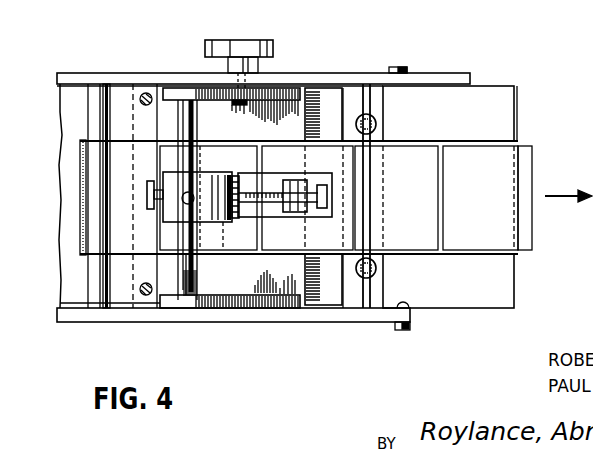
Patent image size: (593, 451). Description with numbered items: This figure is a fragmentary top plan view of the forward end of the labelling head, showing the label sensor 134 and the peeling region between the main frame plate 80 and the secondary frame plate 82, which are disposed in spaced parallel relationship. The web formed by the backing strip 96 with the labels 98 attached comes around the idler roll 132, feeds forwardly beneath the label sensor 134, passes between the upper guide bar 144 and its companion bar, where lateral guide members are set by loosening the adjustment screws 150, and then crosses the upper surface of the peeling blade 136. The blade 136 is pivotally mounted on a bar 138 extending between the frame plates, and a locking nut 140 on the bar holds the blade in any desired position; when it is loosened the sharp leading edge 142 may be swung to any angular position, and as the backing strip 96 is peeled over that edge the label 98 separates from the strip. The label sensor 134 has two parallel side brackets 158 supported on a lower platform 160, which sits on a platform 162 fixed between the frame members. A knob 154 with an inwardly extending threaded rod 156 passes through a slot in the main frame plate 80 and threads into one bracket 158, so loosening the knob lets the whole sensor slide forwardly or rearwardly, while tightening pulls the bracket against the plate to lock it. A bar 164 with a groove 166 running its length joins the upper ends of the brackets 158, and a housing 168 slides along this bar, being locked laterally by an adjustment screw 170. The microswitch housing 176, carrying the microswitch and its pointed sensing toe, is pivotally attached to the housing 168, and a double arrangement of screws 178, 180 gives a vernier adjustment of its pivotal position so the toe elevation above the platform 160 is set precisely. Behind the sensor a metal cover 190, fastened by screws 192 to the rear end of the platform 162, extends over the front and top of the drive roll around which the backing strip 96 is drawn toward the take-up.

The main frame plate 80 is at (113, 82).
The secondary frame plate 82 is at (221, 317).
The backing strip 96 is at (447, 141).
The labels 98 is at (532, 227).
The idler roll 132 is at (97, 273).
The label sensor 134 is at (278, 128).
The peeling blade 136 is at (480, 96).
The bar 138 is at (408, 306).
The locking nut 140 is at (393, 69).
The leading edge 142 is at (515, 98).
The upper guide bar 144 is at (363, 88).
The adjustment screws 150 is at (364, 277).
The knob 154 is at (238, 45).
The threaded rod 156 is at (239, 104).
The side brackets 158 is at (180, 88).
The lower platform 160 is at (294, 281).
The platform 162 is at (325, 93).
The bar 164 is at (181, 273).
The groove 166 is at (188, 272).
The housing 168 is at (203, 172).
The adjustment screw 170 is at (146, 195).
The microswitch housing 176 is at (271, 173).
The adjustment screw 178 is at (242, 217).
The adjustment screw 180 is at (273, 212).
The metal cover 190 is at (66, 129).
The screws 192 is at (143, 93).